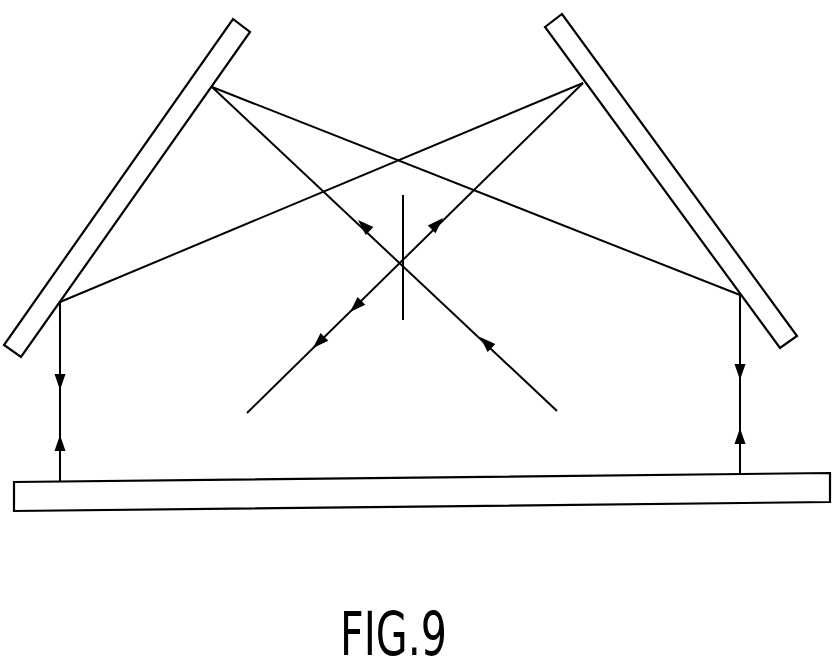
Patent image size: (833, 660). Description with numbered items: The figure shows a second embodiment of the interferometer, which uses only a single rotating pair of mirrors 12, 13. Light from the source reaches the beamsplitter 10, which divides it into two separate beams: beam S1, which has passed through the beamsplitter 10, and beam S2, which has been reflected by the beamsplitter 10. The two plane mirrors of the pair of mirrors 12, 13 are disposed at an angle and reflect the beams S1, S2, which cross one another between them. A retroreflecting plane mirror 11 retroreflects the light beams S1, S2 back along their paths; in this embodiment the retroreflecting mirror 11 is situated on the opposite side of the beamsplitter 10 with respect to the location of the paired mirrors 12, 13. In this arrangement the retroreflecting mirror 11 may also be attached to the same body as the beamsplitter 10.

The beamsplitter 10 is at (403, 302).
The plane mirror 11 is at (157, 481).
The mirror of pair of mirrors 12 is at (153, 172).
The mirror of pair of mirrors 13 is at (641, 160).
The light beam S1 is at (330, 198).
The light beam S2 is at (420, 243).